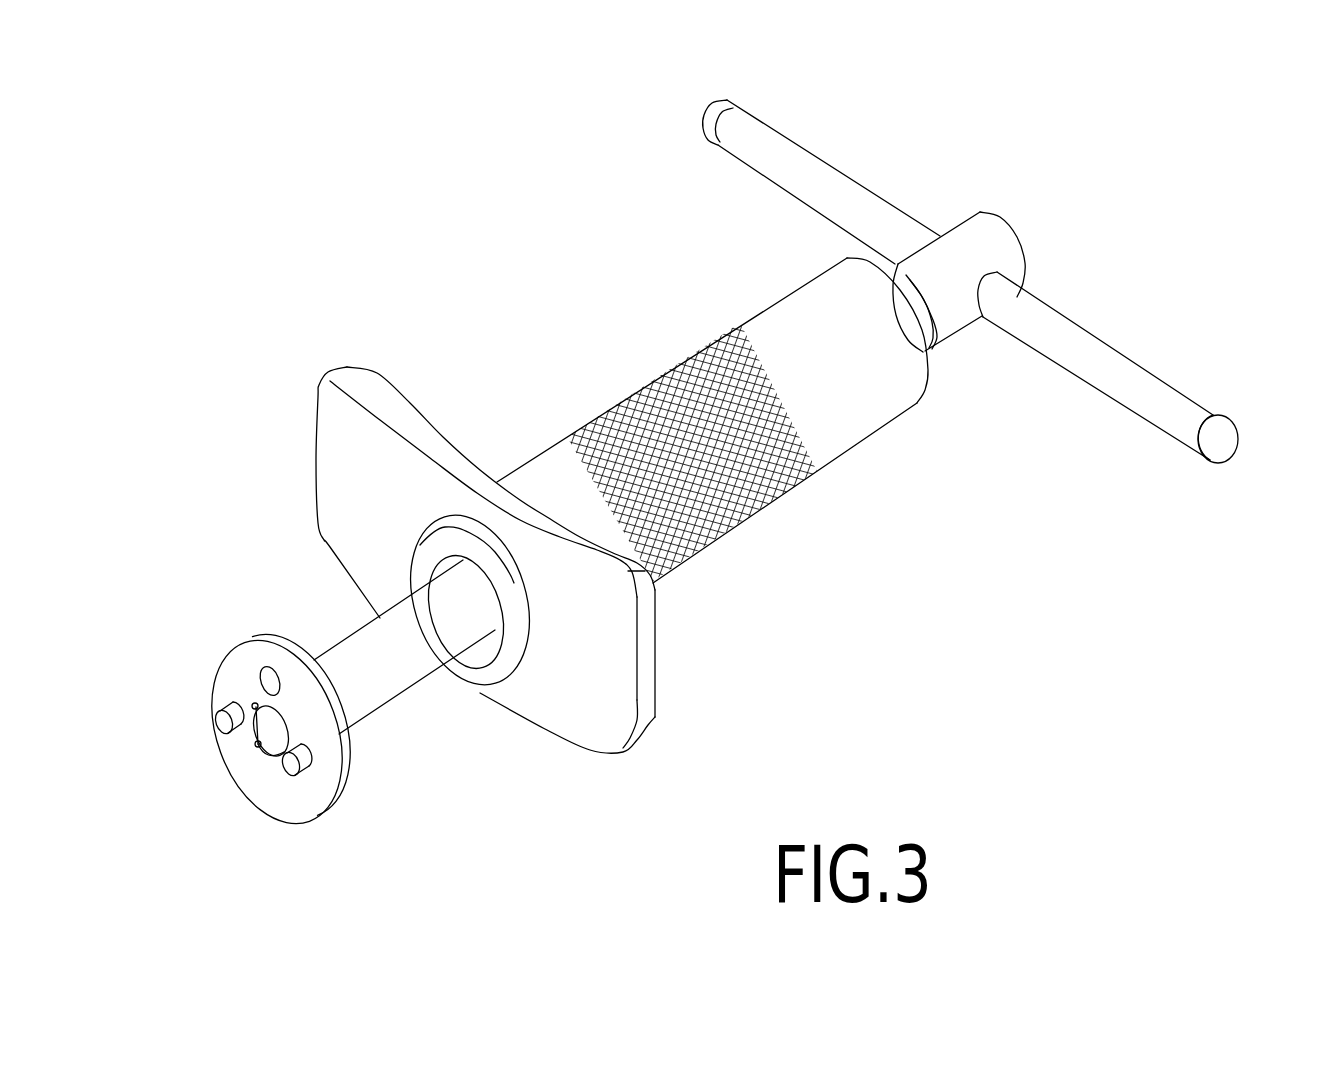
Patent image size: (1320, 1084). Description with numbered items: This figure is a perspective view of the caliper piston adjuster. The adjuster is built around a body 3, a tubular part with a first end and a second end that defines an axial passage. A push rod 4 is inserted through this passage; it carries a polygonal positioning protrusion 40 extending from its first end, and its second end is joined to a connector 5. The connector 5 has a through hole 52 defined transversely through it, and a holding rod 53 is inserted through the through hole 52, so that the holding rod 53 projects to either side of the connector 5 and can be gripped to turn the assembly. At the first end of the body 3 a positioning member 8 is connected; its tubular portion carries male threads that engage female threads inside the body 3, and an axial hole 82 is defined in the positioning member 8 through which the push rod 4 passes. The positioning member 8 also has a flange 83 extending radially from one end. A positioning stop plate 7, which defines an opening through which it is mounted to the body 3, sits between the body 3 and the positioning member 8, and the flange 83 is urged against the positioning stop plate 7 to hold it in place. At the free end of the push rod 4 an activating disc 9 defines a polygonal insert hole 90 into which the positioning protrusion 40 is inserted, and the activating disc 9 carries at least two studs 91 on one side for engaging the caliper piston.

The body 3 is at (867, 440).
The push rod 4 is at (377, 710).
The connector 5 is at (955, 227).
The through hole 52 is at (1000, 277).
The holding rod 53 is at (1130, 358).
The positioning stop plate 7 is at (576, 747).
The positioning member 8 is at (470, 591).
The axial hole 82 is at (483, 647).
The flange 83 is at (457, 523).
The activating disc 9 is at (257, 765).
The positioning protrusion 40 is at (270, 733).
The polygonal insert hole 90 is at (267, 760).
The studs 91 is at (220, 724).